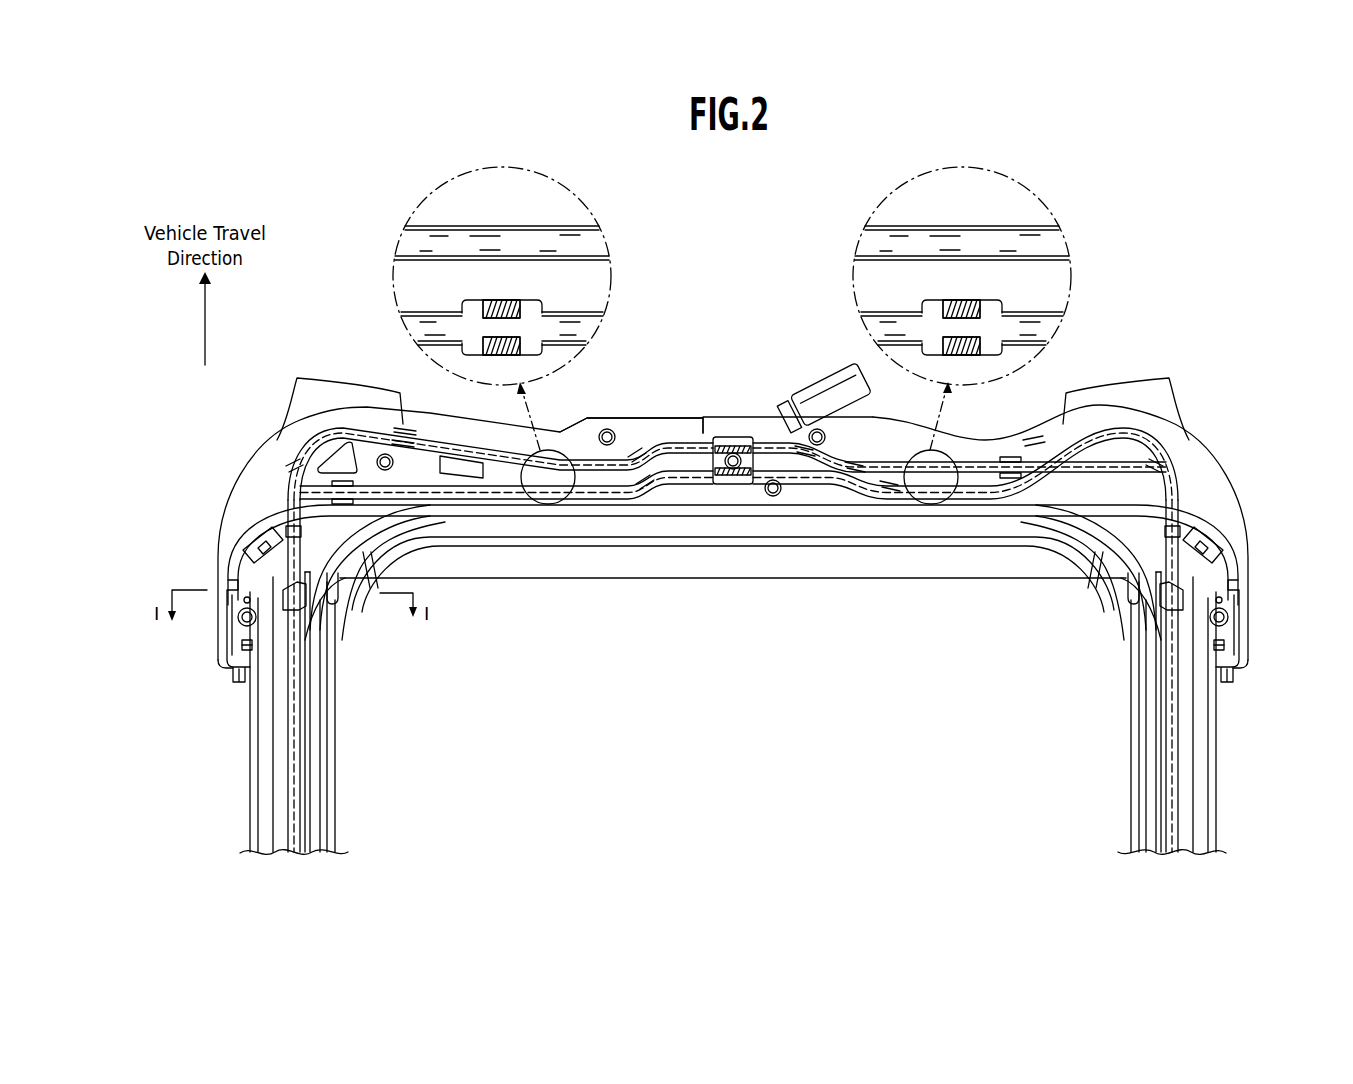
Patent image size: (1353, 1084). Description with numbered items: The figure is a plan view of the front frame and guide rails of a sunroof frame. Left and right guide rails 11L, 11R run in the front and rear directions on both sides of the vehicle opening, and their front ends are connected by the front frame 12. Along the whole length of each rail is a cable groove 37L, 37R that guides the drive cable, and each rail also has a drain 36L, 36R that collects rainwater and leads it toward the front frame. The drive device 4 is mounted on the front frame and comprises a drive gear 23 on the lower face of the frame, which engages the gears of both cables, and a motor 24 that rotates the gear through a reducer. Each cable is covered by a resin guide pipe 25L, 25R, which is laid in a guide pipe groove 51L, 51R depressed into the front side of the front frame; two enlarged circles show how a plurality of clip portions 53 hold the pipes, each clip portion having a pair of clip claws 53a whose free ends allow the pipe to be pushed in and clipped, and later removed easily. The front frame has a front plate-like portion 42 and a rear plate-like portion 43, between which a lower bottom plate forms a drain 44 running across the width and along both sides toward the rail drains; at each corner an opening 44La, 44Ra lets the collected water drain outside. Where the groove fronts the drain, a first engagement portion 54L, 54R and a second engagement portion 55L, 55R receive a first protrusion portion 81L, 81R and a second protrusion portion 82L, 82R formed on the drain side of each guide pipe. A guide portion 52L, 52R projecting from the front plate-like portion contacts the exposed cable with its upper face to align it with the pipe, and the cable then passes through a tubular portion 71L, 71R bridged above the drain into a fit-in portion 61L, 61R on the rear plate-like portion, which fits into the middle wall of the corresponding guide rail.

The drive device 4 is at (728, 416).
The left guide rail 11L is at (336, 748).
The right guide rail 11R is at (1133, 748).
The front frame 12 is at (1027, 424).
The drive gear 23 is at (703, 417).
The motor 24 is at (820, 400).
The left guide pipe 25L is at (595, 257).
The right guide pipe 25R is at (592, 343).
The left drain 36L is at (278, 750).
The right drain 36R is at (1188, 750).
The left cable groove 37L is at (295, 718).
The right cable groove 37R is at (1172, 720).
The front plate-like portion 42 is at (640, 430).
The rear plate-like portion 43 is at (610, 560).
The drain 44 is at (530, 528).
The opening 44La is at (258, 543).
The opening 44Ra is at (1208, 543).
The left guide pipe groove 51L is at (592, 230).
The right guide pipe groove 51R is at (595, 313).
The left guide portion 52L is at (340, 595).
The right guide portion 52R is at (1126, 595).
The clip portion 53 is at (487, 290).
The clip claw 53a is at (478, 297).
The first engagement portion 54L is at (410, 585).
The first engagement portion 54R is at (1063, 577).
The second engagement portion 55L is at (347, 590).
The second engagement portion 55R is at (1121, 590).
The left fit-in portion 61L is at (283, 595).
The right fit-in portion 61R is at (1183, 595).
The left tubular portion 71L is at (288, 530).
The right tubular portion 71R is at (1178, 530).
The first protrusion portion 81L is at (286, 476).
The first protrusion portion 81R is at (1180, 476).
The second protrusion portion 82L is at (290, 512).
The second protrusion portion 82R is at (1176, 512).